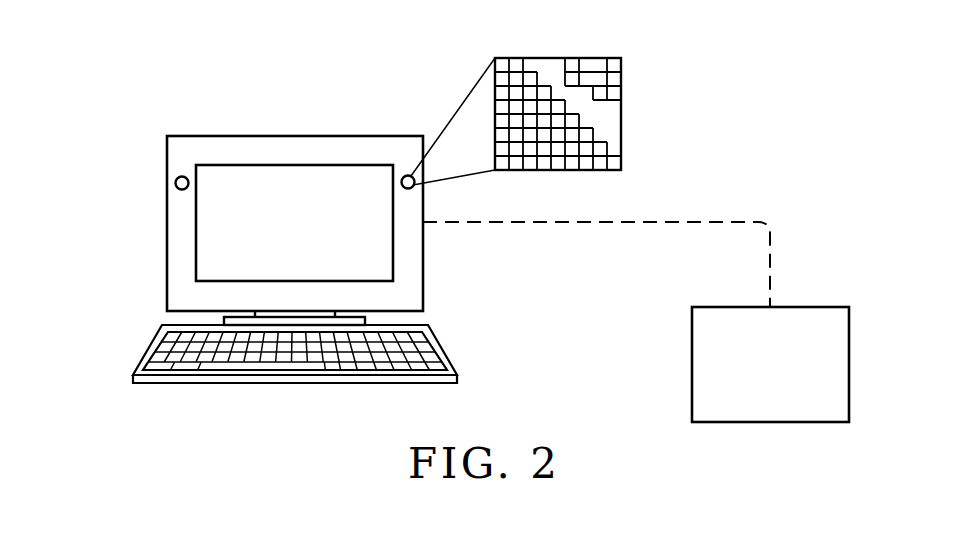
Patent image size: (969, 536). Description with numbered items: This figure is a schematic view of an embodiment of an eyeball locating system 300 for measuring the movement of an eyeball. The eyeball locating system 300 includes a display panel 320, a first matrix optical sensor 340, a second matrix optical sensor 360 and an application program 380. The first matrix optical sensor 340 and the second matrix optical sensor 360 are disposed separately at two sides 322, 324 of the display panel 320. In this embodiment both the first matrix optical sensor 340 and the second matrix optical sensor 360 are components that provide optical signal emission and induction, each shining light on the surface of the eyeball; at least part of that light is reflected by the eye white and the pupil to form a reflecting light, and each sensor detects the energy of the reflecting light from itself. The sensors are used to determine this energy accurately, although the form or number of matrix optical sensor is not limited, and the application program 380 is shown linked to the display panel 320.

The eyeball locating system 300 is at (138, 72).
The display panel 320 is at (423, 293).
The side of the display panel 322 is at (415, 252).
The side of the display panel 324 is at (173, 257).
The first matrix optical sensor 340 is at (408, 176).
The second matrix optical sensor 360 is at (175, 183).
The application program 380 is at (795, 307).